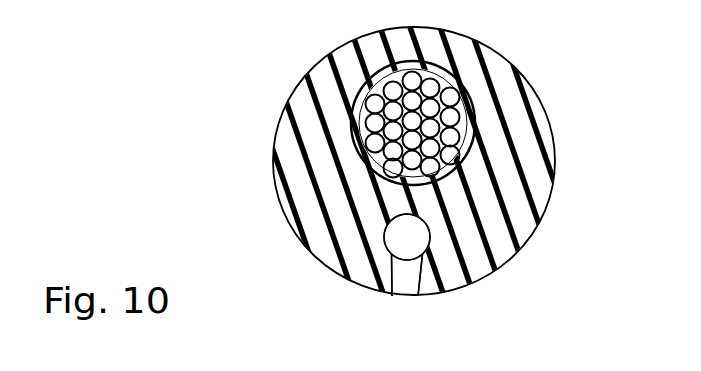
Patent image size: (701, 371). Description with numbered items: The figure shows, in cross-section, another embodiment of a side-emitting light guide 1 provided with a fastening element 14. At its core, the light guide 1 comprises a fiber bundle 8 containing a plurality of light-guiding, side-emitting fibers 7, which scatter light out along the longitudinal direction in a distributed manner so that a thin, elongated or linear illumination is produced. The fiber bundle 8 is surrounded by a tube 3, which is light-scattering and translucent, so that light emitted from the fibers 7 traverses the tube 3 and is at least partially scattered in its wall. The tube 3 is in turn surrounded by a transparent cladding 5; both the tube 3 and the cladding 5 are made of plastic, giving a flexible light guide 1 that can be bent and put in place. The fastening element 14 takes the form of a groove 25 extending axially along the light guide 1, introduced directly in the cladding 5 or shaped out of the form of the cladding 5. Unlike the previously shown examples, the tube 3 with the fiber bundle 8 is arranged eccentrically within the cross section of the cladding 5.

The light guide 1 is at (189, 97).
The tube 3 is at (462, 115).
The cladding 5 is at (555, 137).
The side-emitting fibers 7 is at (383, 147).
The fiber bundle 8 is at (378, 152).
The fastening element 14 is at (402, 290).
The groove 25 is at (407, 255).